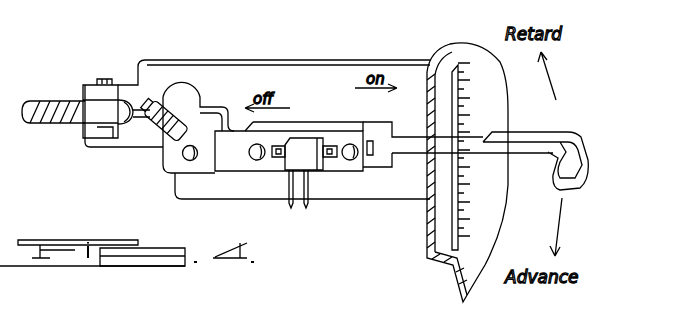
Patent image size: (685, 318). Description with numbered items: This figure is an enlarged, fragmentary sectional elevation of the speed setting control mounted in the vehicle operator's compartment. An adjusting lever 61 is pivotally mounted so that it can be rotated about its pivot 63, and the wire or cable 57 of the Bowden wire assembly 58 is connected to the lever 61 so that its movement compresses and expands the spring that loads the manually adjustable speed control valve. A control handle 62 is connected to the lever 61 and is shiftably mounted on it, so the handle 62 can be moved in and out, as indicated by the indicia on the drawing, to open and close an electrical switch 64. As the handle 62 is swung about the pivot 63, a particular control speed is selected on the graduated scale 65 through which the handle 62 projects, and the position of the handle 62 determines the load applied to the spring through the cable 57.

The cable 57 is at (147, 110).
The Bowden wire assembly 58 is at (40, 108).
The adjusting lever 61 is at (185, 85).
The control handle 62 is at (587, 157).
The pivot 63 is at (182, 154).
The electrical switch 64 is at (292, 150).
The graduated scale 65 is at (462, 50).